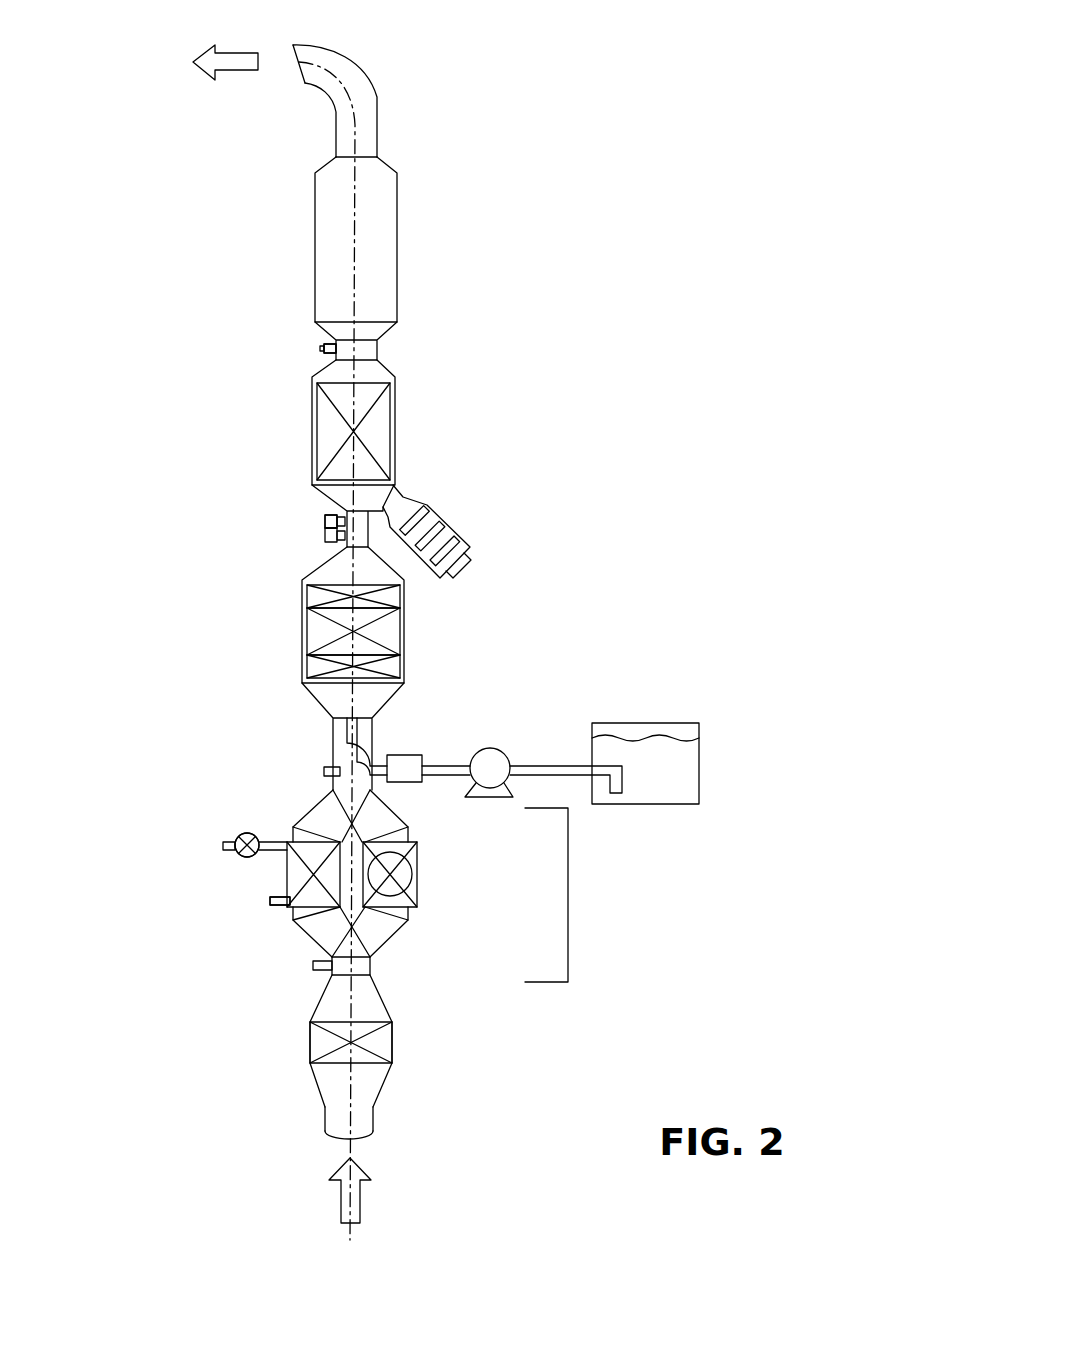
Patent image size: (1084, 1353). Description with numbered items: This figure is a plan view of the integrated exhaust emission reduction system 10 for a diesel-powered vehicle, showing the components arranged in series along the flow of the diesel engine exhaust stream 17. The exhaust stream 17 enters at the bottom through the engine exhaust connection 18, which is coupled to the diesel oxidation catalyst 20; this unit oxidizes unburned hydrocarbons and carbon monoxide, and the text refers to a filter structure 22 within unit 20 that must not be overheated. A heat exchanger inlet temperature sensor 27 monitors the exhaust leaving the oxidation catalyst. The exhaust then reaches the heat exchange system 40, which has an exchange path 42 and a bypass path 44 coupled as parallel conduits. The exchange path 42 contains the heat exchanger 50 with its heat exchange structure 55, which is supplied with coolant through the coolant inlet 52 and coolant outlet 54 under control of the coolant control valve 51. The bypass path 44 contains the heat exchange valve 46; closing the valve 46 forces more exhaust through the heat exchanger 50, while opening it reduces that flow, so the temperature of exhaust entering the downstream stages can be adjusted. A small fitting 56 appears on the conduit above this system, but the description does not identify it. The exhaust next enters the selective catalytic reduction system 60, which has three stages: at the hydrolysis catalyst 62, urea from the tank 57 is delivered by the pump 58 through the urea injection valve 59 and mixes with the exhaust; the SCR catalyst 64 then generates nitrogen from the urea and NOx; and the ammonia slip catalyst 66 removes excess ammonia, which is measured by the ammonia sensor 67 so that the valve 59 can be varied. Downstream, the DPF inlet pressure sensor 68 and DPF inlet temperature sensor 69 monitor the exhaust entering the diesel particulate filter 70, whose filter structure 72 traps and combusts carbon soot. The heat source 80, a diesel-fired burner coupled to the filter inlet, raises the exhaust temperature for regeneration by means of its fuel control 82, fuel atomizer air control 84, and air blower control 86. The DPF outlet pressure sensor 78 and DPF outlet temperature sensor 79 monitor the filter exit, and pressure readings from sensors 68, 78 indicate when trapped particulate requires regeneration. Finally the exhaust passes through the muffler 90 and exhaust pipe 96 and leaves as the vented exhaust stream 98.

The exhaust emission reduction system 10 is at (507, 160).
The diesel engine exhaust stream 17 is at (358, 1203).
The engine exhaust connection 18 is at (325, 1120).
The diesel oxidation catalyst 20 is at (392, 1043).
The filter structure 22 is at (313, 1048).
The heat exchanger inlet temperature sensor 27 is at (313, 968).
The heat exchange system 40 is at (568, 893).
The exchange path 42 is at (312, 938).
The bypass path 44 is at (400, 933).
The heat exchange valve 46 is at (412, 887).
The heat exchanger 50 is at (287, 868).
The coolant control valve 51 is at (243, 832).
The coolant inlet 52 is at (208, 833).
The coolant outlet 54 is at (268, 901).
The heat exchange structure 55 is at (292, 910).
The sensor 56 is at (323, 770).
The tank 57 is at (690, 723).
The pump 58 is at (505, 753).
The urea injection valve 59 is at (405, 755).
The selective catalytic reduction system 60 is at (405, 625).
The hydrolysis catalyst 62 is at (307, 667).
The SCR catalyst 64 is at (307, 630).
The ammonia slip catalyst 66 is at (307, 595).
The ammonia sensor 67 is at (323, 537).
The DPF inlet pressure sensor 68 is at (325, 523).
The DPF inlet temperature sensor 69 is at (331, 521).
The diesel particulate filter 70 is at (395, 413).
The filter structure 72 is at (322, 432).
The DPF outlet pressure sensor 78 is at (320, 348).
The DPF outlet temperature sensor 79 is at (330, 348).
The heat source 80 is at (478, 566).
The fuel control 82 is at (465, 540).
The fuel atomizer air control 84 is at (440, 527).
The air blower control 86 is at (420, 520).
The muffler 90 is at (397, 245).
The exhaust pipe 96 is at (371, 101).
The vented exhaust stream 98 is at (295, 62).